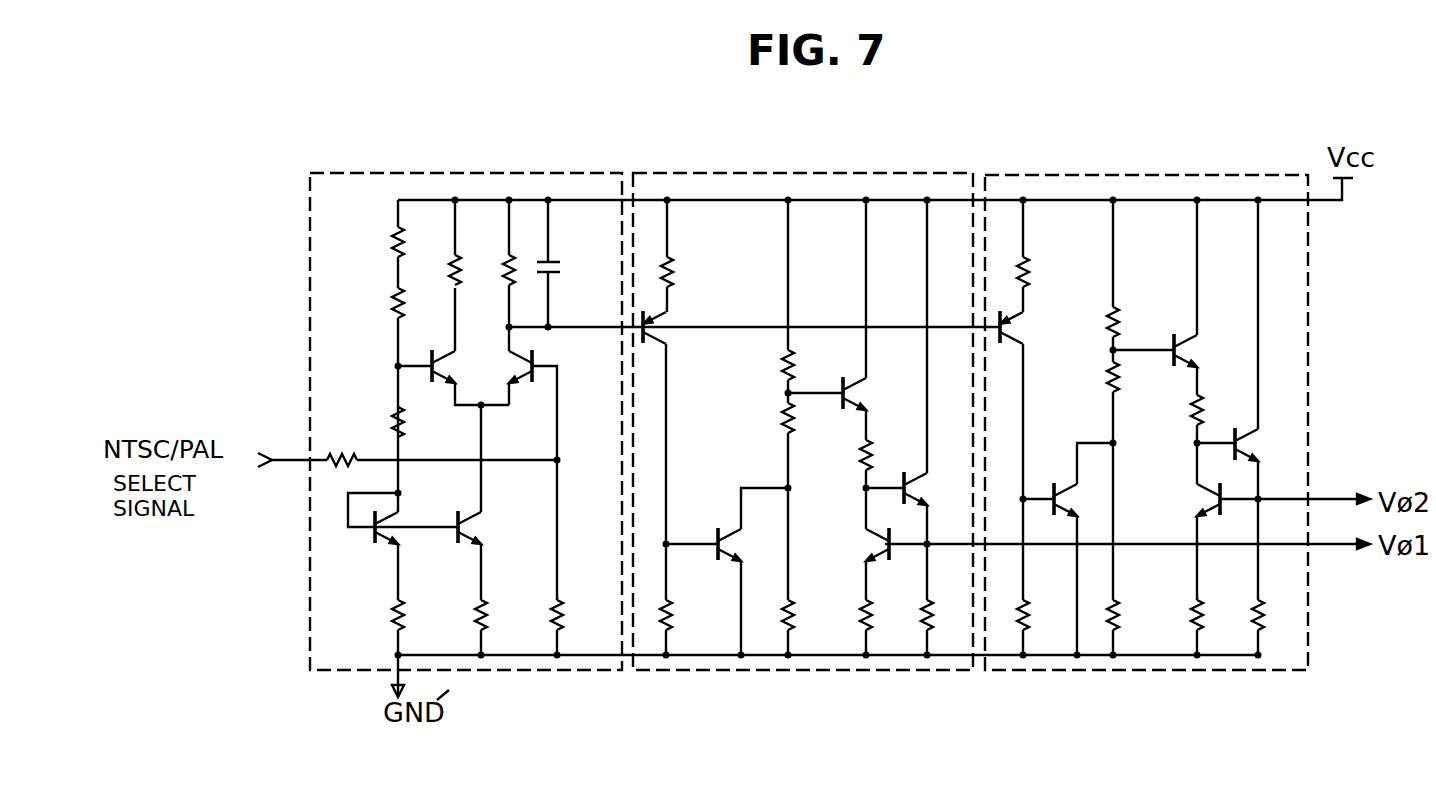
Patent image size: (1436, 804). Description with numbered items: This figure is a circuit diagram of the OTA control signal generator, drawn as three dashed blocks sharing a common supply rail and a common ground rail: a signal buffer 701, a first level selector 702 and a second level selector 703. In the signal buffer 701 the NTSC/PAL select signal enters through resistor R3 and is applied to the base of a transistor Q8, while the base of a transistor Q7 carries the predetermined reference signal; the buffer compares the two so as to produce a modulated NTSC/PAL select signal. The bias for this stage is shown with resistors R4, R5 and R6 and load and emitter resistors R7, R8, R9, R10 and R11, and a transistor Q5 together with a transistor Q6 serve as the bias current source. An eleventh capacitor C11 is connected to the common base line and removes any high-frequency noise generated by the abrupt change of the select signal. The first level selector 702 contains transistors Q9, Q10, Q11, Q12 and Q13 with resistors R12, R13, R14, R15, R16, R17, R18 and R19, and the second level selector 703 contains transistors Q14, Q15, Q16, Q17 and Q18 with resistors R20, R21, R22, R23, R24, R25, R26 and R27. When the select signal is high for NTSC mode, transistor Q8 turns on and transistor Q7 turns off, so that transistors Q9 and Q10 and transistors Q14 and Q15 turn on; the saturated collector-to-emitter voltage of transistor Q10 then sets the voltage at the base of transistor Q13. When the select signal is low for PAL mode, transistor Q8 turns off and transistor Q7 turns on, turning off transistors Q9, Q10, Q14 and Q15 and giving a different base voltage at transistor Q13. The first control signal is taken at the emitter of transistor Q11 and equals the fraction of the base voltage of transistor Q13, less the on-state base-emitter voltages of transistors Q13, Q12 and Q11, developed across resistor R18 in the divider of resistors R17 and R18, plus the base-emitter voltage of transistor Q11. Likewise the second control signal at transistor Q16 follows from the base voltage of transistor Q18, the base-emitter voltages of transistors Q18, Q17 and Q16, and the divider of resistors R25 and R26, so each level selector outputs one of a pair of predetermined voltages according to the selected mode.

The signal buffer 701 is at (494, 173).
The first level selector 702 is at (796, 173).
The second level selector 703 is at (1120, 174).
The resistor R3 is at (345, 444).
The resistor R4 is at (380, 241).
The resistor R5 is at (380, 302).
The resistor R6 is at (419, 426).
The resistor R7 is at (416, 617).
The resistor R8 is at (436, 243).
The resistor R9 is at (491, 263).
The resistor R10 is at (509, 627).
The resistor R11 is at (585, 627).
The eleventh capacitor C11 is at (578, 263).
The transistor Q5 is at (403, 527).
The transistor Q6 is at (485, 502).
The transistor Q7 is at (453, 346).
The transistor Q8 is at (514, 463).
The resistor R12 is at (694, 256).
The resistor R13 is at (694, 627).
The resistor R14 is at (759, 301).
The resistor R15 is at (759, 501).
The resistor R16 is at (816, 627).
The resistor R17 is at (837, 484).
The resistor R18 is at (884, 627).
The resistor R19 is at (944, 627).
The transistor Q9 is at (675, 449).
The transistor Q10 is at (727, 571).
The transistor Q11 is at (851, 563).
The transistor Q12 is at (917, 400).
The transistor Q13 is at (854, 320).
The resistor R20 is at (1052, 256).
The resistor R21 is at (1040, 627).
The resistor R22 is at (1140, 281).
The resistor R23 is at (1083, 481).
The resistor R24 is at (1140, 627).
The resistor R25 is at (1165, 439).
The resistor R26 is at (1212, 627).
The resistor R27 is at (1273, 627).
The transistor Q14 is at (1042, 455).
The transistor Q15 is at (1068, 549).
The transistor Q16 is at (1181, 541).
The transistor Q17 is at (1250, 400).
The transistor Q18 is at (1181, 297).